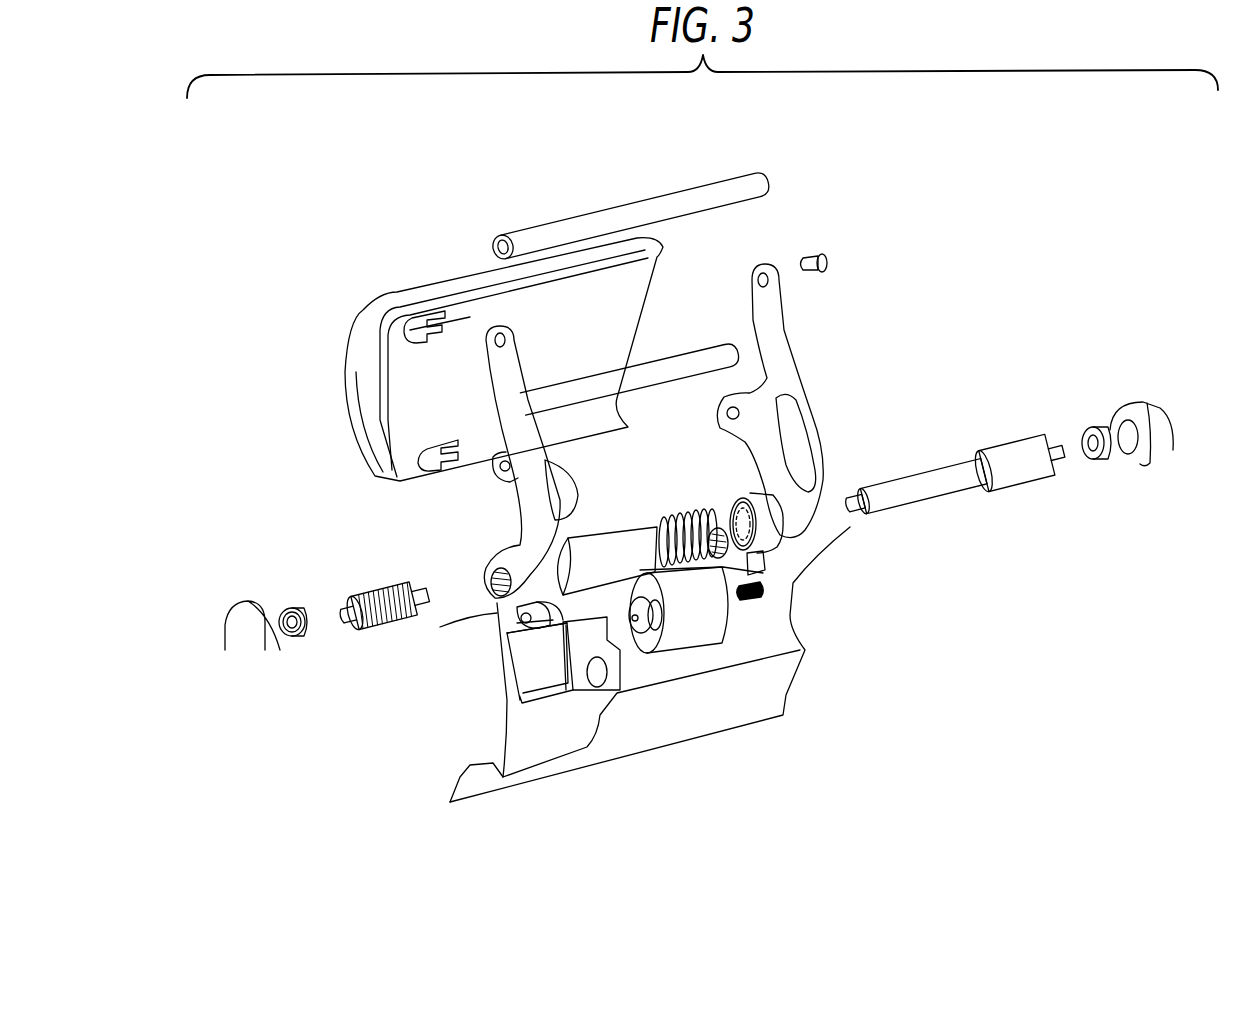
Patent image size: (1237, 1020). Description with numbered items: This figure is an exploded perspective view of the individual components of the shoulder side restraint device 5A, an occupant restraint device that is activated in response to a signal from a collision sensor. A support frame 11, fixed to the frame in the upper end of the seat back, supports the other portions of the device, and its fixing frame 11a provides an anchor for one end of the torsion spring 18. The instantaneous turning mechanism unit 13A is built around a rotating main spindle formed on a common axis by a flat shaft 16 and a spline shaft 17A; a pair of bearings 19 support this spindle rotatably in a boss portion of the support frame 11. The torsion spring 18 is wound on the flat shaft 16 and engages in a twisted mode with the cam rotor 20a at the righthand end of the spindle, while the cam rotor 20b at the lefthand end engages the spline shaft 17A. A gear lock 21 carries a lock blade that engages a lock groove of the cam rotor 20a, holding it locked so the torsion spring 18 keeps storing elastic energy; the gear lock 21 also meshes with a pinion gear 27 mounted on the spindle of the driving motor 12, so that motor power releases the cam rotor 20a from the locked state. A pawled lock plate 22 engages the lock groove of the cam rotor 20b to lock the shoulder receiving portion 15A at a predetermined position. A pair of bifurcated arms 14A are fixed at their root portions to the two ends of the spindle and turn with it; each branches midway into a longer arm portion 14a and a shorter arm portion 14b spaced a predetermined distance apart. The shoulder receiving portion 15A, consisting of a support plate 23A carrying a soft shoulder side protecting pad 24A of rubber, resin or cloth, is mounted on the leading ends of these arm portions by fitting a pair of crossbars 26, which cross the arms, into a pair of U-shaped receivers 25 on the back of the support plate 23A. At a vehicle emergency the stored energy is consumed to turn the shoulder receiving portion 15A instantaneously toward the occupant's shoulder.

The shoulder side restraint device 5A is at (962, 310).
The support frame 11 is at (742, 715).
The fixing frame 11a is at (610, 537).
The driving motor 12 is at (685, 640).
The instantaneous turning mechanism unit 13A is at (950, 615).
The bifurcated arm 14A is at (777, 367).
The longer arm portion 14a is at (515, 337).
The shorter arm portion 14b is at (495, 477).
The shoulder receiving portion 15A is at (330, 377).
The flat shaft 16 is at (927, 477).
The spline shaft 17A is at (375, 590).
The torsion spring 18 is at (712, 513).
The bearing 19 is at (297, 603).
The cam rotor 20a is at (785, 528).
The cam rotor 20b is at (493, 607).
The gear lock 21 is at (760, 575).
The pawled lock plate 22 is at (508, 648).
The support plate 23A is at (397, 358).
The shoulder side protecting pad 24A is at (358, 423).
The U-shaped receiver 25 is at (415, 320).
The crossbar 26 is at (646, 210).
The pinion gear 27 is at (763, 595).